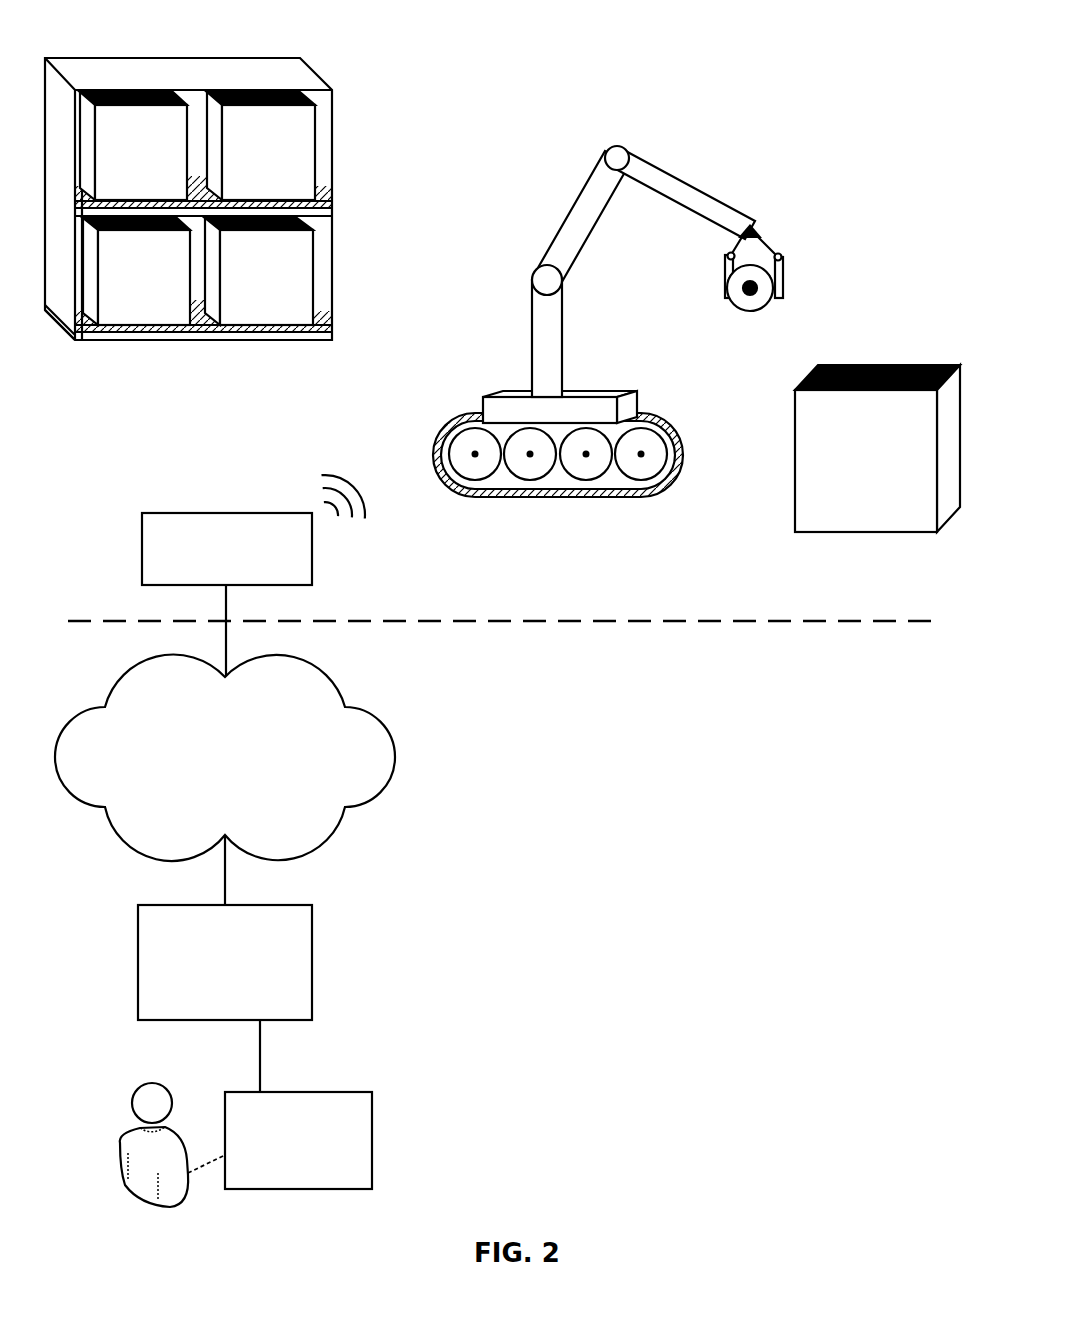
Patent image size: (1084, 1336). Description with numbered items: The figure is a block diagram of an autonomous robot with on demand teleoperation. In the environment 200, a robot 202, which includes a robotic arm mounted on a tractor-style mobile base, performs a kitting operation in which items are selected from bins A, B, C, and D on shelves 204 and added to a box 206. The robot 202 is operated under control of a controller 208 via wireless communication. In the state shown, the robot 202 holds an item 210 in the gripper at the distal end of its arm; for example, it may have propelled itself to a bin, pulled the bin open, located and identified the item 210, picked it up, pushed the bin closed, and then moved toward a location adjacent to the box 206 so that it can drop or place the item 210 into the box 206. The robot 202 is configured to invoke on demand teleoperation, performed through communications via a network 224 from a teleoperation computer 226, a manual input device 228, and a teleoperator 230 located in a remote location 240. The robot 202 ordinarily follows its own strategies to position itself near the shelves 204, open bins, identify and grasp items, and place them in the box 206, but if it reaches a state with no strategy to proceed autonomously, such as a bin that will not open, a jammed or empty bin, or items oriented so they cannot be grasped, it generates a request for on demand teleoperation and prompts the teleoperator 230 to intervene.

The environment 200 is at (792, 77).
The robot 202 is at (575, 212).
The shelves 204 is at (212, 74).
The box 206 is at (793, 508).
The controller 208 is at (175, 512).
The item 210 is at (748, 312).
The network 224 is at (397, 760).
The teleoperation computer 226 is at (312, 970).
The manual input device 228 is at (372, 1133).
The teleoperator 230 is at (120, 1142).
The remote location 240 is at (772, 709).